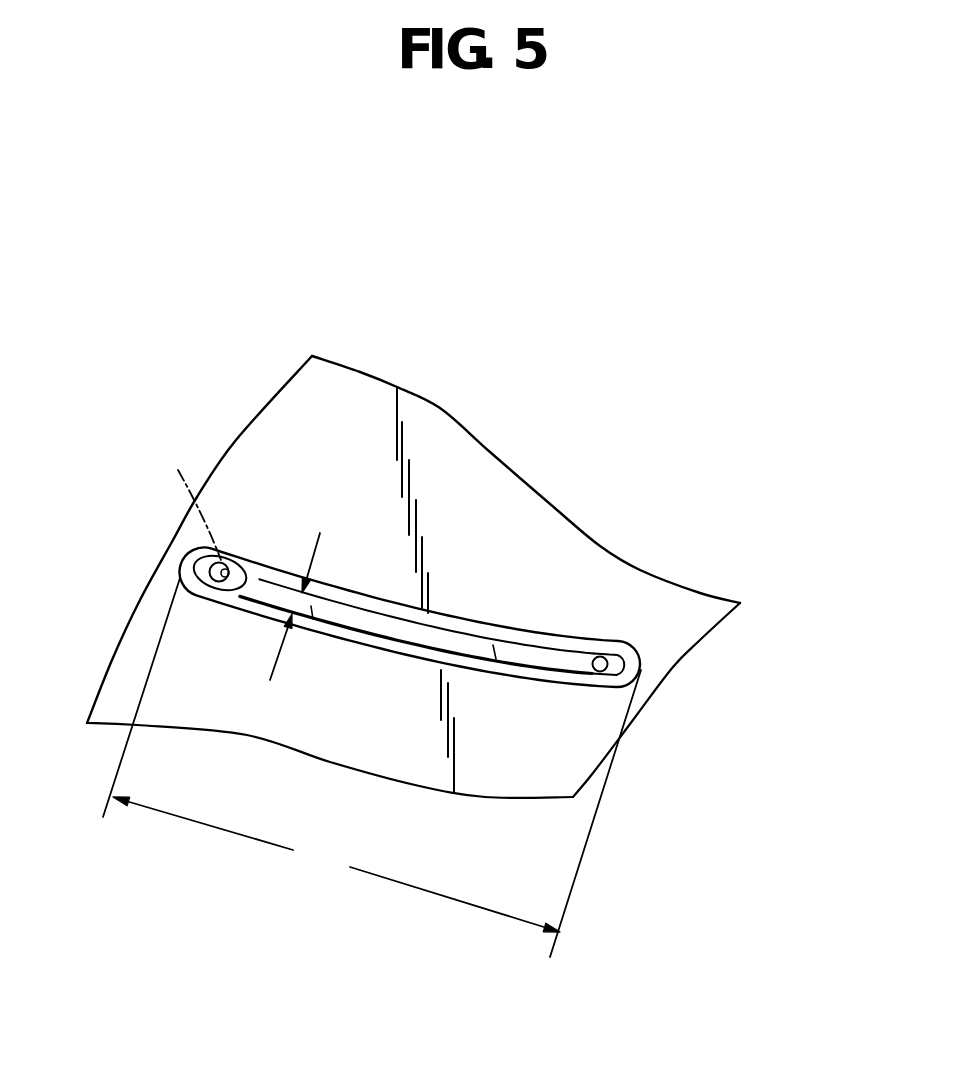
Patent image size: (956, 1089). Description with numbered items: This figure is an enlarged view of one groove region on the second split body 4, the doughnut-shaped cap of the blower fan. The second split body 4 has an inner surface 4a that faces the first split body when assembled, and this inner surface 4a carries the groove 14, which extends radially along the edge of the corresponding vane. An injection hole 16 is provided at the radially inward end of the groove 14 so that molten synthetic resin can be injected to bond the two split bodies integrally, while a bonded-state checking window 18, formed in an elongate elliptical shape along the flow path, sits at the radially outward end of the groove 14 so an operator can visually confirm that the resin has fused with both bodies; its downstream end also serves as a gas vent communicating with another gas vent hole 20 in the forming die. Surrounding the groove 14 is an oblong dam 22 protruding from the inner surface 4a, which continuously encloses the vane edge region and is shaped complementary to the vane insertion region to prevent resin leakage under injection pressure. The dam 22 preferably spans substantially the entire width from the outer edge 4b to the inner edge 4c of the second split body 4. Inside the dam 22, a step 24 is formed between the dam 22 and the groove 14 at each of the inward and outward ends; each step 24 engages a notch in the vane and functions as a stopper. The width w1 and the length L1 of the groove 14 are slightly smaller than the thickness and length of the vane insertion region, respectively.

The second split body 4 is at (452, 487).
The inner surface 4a is at (627, 590).
The outer edge 4b is at (240, 437).
The inner edge 4c is at (707, 632).
The groove 14 is at (463, 647).
The injection hole 16 is at (600, 667).
The bonded-state checking window 18 is at (235, 557).
The gas vent hole 20 is at (190, 491).
The dam 22 is at (497, 637).
The step 24 is at (200, 568).
The width of the groove w1 is at (312, 606).
The length of the groove L1 is at (372, 767).